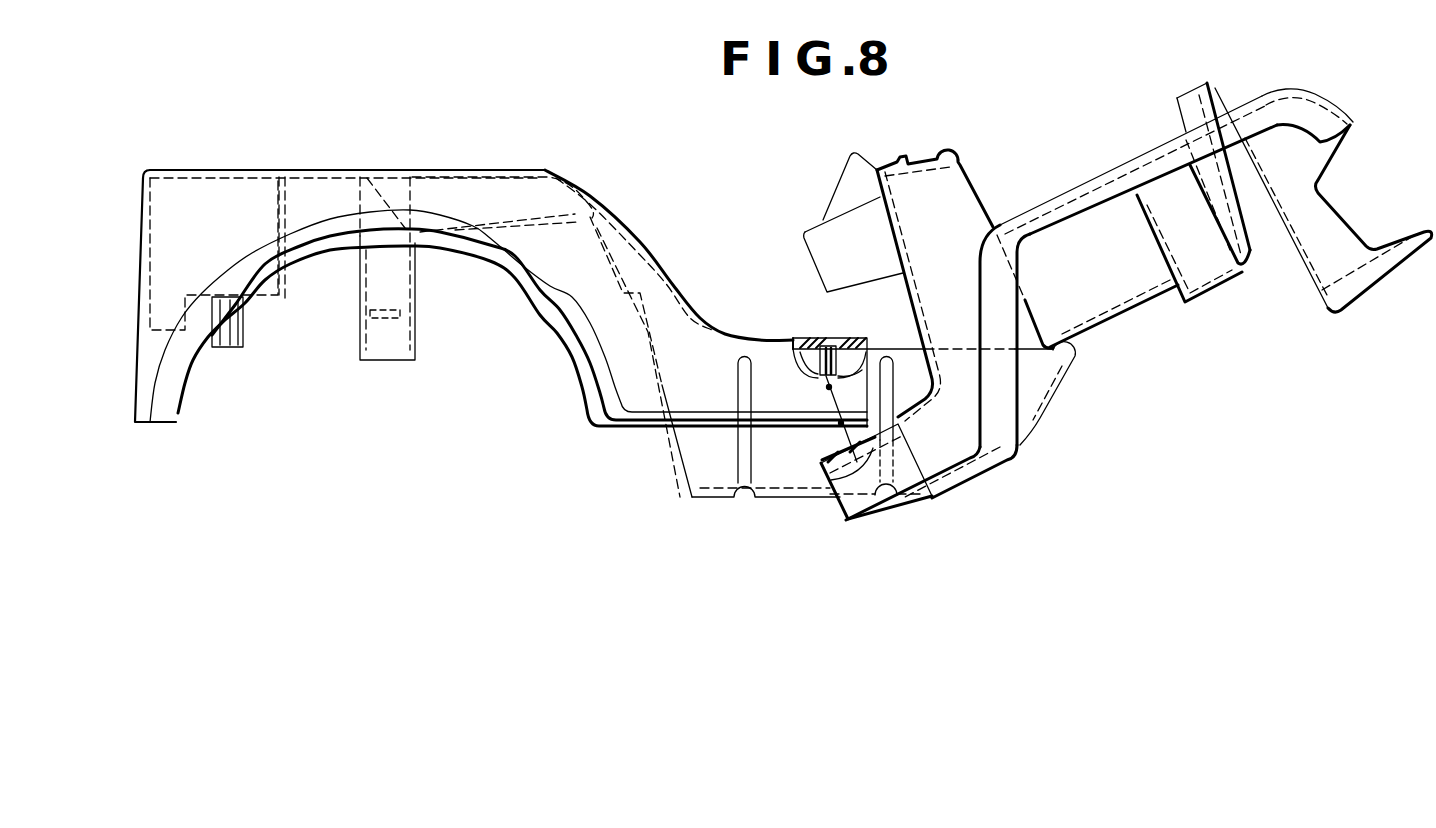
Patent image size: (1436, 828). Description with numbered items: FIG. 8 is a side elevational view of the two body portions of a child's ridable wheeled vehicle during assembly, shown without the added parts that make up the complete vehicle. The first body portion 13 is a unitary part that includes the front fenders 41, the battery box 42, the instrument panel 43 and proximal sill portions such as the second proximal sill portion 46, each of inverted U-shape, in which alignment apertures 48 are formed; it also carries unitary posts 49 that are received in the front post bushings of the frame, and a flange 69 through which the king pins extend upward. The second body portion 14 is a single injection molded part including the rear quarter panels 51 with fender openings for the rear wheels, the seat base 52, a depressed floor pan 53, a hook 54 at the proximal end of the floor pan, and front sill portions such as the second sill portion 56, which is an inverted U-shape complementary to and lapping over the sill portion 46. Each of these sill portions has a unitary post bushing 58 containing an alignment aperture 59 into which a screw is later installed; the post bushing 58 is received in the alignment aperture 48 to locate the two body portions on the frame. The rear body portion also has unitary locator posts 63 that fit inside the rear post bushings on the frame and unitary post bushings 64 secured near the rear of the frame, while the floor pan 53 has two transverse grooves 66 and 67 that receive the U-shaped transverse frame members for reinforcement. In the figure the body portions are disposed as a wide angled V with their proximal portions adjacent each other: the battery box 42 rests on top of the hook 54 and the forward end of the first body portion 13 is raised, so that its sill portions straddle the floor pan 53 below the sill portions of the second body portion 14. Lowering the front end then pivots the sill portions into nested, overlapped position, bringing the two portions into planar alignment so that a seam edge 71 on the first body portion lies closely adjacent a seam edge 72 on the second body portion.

The first body portion 13 is at (950, 193).
The second body portion 14 is at (640, 273).
The front fenders 41 is at (1285, 110).
The battery box 42 is at (1100, 307).
The instrument panel 43 is at (833, 190).
The second proximal sill portion 46 is at (851, 510).
The alignment apertures 48 is at (830, 447).
The unitary posts 49 is at (1243, 272).
The rear quarter panels 51 is at (233, 190).
The seat base 52 is at (477, 222).
The depressed floor pan 53 is at (795, 497).
The hook 54 is at (1075, 358).
The second sill portion 56 is at (770, 357).
The post bushing 58 is at (824, 360).
The alignment aperture 59 is at (829, 346).
The locator posts 63 is at (418, 323).
The post bushings 64 is at (245, 318).
The transverse groove 66 is at (886, 506).
The transverse groove 67 is at (735, 497).
The flange 69 is at (1133, 163).
The seam edge 71 is at (907, 467).
The seam edge 72 is at (850, 383).